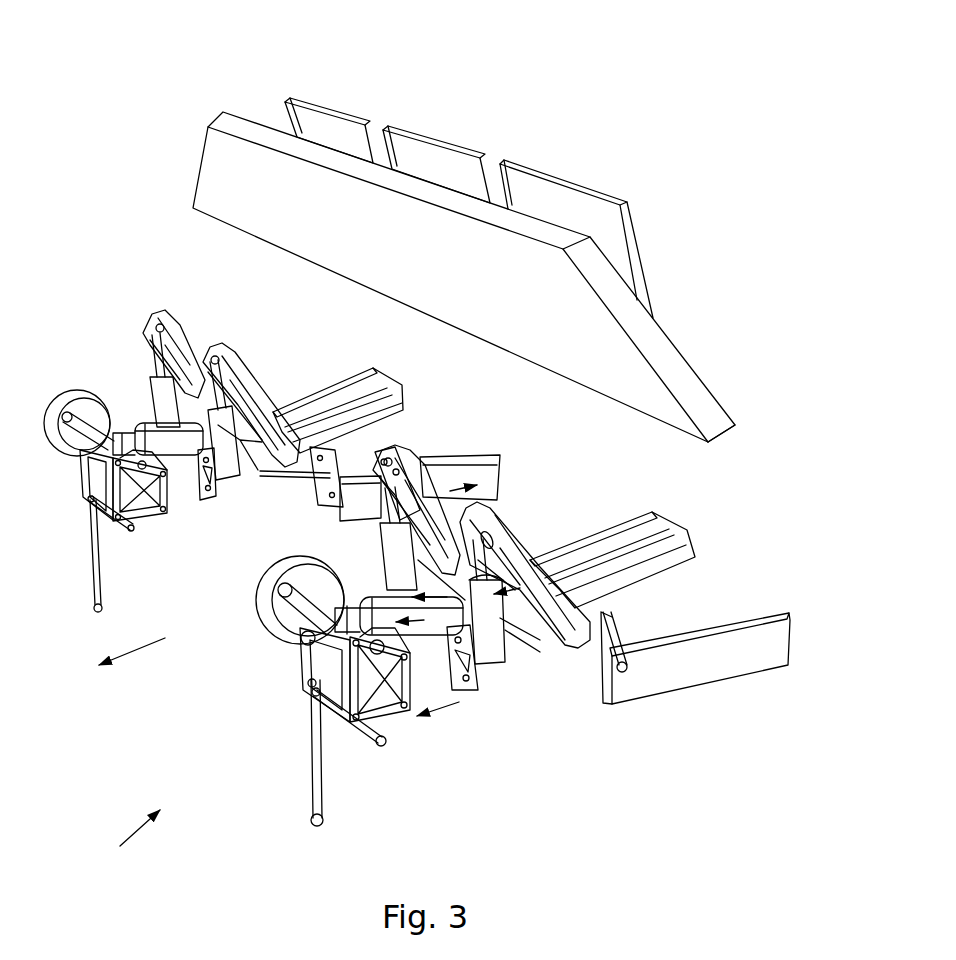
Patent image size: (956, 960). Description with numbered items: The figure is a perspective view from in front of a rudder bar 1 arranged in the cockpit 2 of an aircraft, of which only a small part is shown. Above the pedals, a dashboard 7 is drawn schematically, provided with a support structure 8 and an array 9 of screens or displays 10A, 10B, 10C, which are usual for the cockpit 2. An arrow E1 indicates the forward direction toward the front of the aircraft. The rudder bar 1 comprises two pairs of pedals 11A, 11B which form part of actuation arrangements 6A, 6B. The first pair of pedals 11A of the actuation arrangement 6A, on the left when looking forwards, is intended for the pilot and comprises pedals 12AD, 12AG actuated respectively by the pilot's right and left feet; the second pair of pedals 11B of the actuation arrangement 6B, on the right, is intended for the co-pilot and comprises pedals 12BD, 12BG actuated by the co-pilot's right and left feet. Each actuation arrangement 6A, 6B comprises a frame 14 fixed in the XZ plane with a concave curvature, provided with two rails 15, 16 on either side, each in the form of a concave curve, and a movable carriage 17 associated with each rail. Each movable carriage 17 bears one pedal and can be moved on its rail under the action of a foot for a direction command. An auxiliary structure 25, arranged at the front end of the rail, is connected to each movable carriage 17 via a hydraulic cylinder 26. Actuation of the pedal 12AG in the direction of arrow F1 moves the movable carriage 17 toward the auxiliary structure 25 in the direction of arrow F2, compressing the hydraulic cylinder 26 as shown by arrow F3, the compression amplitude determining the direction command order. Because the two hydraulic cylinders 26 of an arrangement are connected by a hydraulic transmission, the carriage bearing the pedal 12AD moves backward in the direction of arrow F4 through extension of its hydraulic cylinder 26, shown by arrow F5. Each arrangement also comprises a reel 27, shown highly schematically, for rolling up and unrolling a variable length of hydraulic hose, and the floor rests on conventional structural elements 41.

The rudder bar 1 is at (131, 841).
The cockpit 2 is at (741, 269).
The actuation arrangement 6A is at (573, 731).
The actuation arrangement 6B is at (74, 326).
The dashboard 7 is at (158, 101).
The support structure 8 is at (722, 430).
The array of screens or displays 9 is at (294, 85).
The screen or display 10A is at (594, 208).
The screen or display 10B is at (452, 157).
The screen or display 10C is at (347, 117).
The first pair of pedals 11A is at (566, 469).
The second pair of pedals 11B is at (206, 307).
The pedal 12AD is at (410, 476).
The pedal 12AG is at (503, 533).
The pedal 12BD is at (170, 333).
The pedal 12BG is at (232, 366).
The frame 14 is at (417, 383).
The rail 15 is at (395, 400).
The rail 16 is at (354, 375).
The movable carriage 17 is at (222, 507).
The auxiliary structure 25 is at (395, 731).
The hydraulic cylinder 26 is at (135, 425).
The reel 27 is at (57, 401).
The structural elements 41 is at (732, 672).
The arrow E1 is at (148, 648).
The arrow F1 is at (530, 557).
The arrow F2 is at (460, 703).
The arrow F3 is at (390, 608).
The arrow F4 is at (483, 480).
The arrow F5 is at (408, 596).